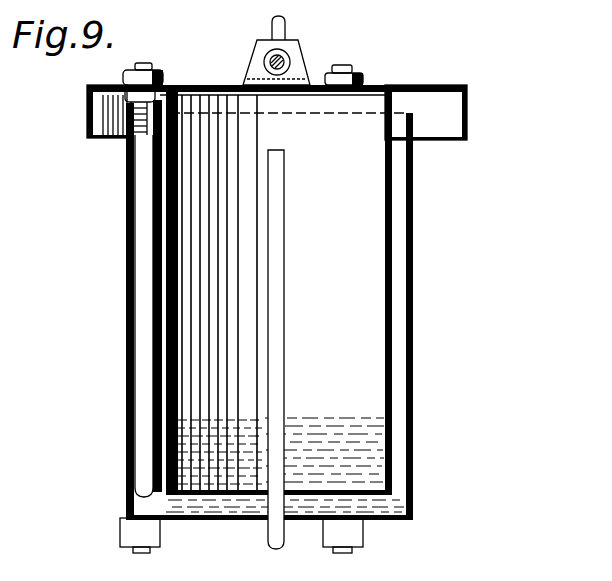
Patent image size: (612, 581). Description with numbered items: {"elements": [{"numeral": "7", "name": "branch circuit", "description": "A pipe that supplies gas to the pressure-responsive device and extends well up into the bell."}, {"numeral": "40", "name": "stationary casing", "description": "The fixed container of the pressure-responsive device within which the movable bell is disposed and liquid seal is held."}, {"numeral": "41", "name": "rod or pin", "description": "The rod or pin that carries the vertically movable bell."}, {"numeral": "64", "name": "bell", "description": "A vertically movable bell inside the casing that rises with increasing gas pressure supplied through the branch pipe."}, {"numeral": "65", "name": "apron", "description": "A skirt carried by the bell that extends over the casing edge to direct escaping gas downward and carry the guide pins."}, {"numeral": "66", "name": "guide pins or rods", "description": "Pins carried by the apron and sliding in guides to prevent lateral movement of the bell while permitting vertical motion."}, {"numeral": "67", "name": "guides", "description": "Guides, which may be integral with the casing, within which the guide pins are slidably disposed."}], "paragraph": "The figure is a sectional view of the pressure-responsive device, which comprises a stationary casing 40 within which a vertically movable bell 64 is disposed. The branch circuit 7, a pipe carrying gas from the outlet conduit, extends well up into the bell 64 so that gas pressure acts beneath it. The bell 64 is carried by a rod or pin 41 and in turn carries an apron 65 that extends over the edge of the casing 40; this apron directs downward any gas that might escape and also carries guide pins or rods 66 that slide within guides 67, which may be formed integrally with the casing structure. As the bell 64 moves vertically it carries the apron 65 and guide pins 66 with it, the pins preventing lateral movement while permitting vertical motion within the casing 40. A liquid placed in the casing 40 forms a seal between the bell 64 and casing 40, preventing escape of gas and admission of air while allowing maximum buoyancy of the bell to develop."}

The rod 7 is at (286, 538).
The tank 40 is at (413, 330).
The bracket 41 is at (279, 30).
The basket 64 is at (385, 252).
The lid 65 is at (468, 118).
The tube 66 is at (140, 253).
The sheath 67 is at (125, 381).